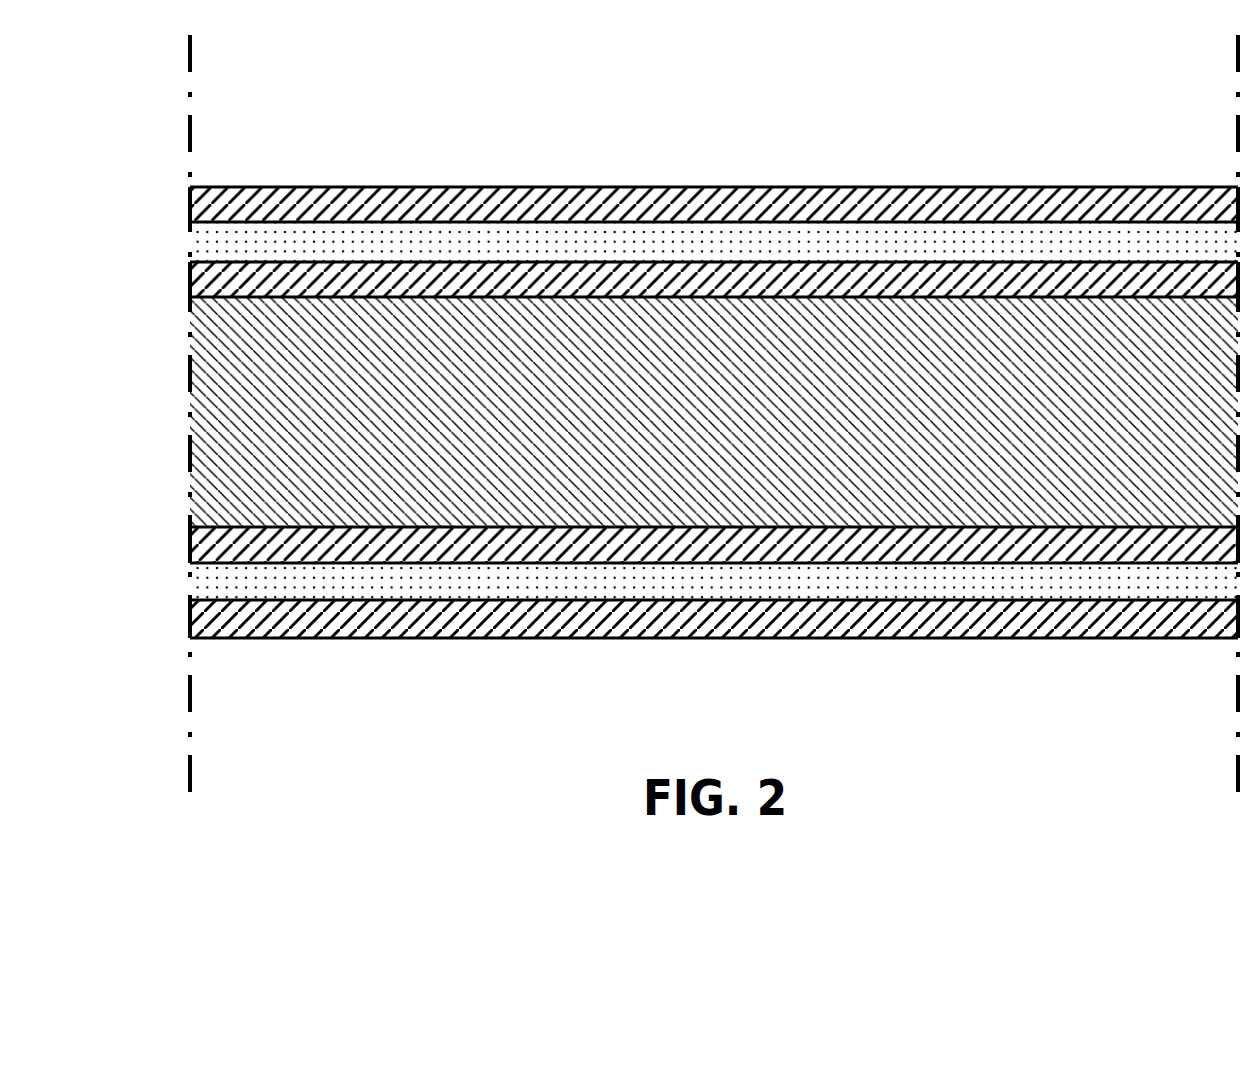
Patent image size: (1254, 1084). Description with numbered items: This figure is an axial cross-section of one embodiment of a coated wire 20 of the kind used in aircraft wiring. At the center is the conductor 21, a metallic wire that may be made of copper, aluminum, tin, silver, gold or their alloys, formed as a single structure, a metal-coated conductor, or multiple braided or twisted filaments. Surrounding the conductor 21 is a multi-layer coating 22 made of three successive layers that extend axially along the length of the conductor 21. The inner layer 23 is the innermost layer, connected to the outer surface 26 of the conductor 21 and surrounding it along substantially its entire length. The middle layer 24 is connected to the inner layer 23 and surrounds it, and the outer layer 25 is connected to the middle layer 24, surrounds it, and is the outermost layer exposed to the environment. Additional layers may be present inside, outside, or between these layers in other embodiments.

The coated wire 20 is at (714, 414).
The conductor 21 is at (992, 367).
The multi-layer coating 22 is at (990, 607).
The inner layer 23 is at (755, 290).
The middle layer 24 is at (530, 235).
The outer layer 25 is at (328, 197).
The outer surface 26 is at (1083, 290).